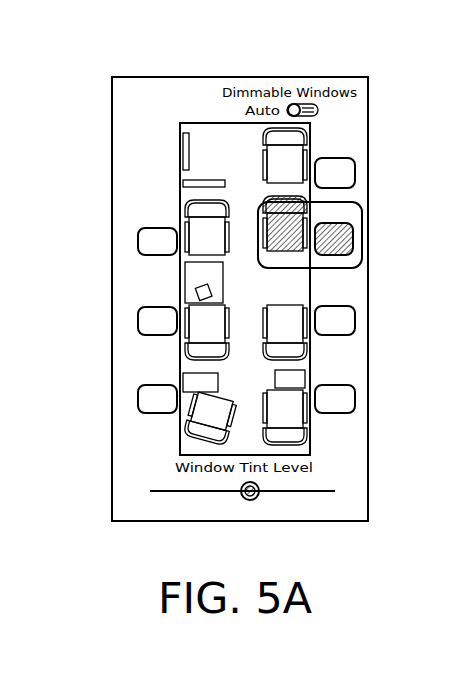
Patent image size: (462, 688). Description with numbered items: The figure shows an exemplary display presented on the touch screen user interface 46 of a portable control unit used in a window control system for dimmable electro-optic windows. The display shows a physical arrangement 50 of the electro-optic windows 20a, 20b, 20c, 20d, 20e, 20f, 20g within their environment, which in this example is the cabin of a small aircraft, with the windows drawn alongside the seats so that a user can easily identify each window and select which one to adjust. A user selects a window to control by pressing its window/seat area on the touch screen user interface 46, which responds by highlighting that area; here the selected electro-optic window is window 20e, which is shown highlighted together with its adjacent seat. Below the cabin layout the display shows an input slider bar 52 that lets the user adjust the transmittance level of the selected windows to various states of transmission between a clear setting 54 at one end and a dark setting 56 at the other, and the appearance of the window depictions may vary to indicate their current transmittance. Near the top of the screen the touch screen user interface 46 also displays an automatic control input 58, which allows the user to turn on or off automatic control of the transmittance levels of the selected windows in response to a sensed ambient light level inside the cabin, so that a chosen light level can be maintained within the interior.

The touch screen user interface 46 is at (357, 80).
The physical arrangement 50 is at (218, 150).
The input slider bar 52 is at (250, 500).
The clear setting 54 is at (137, 514).
The dark setting 56 is at (328, 514).
The automatic control input 58 is at (318, 110).
The electro-optic window 20a is at (153, 243).
The electro-optic window 20b is at (160, 325).
The electro-optic window 20c is at (153, 405).
The electro-optic window 20d is at (342, 176).
The electro-optic window 20e is at (340, 244).
The electro-optic window 20f is at (342, 325).
The electro-optic window 20g is at (347, 410).